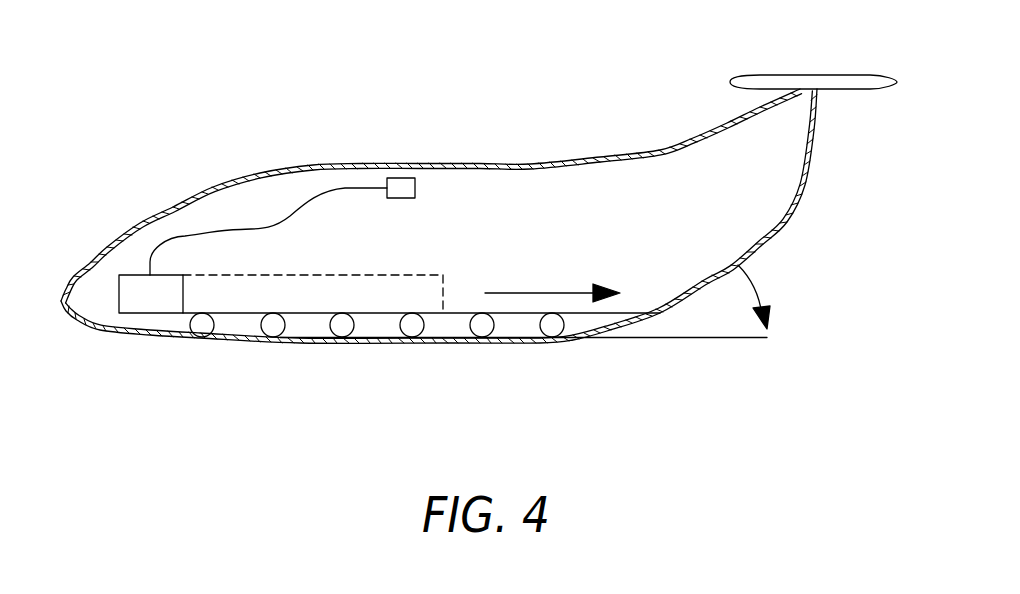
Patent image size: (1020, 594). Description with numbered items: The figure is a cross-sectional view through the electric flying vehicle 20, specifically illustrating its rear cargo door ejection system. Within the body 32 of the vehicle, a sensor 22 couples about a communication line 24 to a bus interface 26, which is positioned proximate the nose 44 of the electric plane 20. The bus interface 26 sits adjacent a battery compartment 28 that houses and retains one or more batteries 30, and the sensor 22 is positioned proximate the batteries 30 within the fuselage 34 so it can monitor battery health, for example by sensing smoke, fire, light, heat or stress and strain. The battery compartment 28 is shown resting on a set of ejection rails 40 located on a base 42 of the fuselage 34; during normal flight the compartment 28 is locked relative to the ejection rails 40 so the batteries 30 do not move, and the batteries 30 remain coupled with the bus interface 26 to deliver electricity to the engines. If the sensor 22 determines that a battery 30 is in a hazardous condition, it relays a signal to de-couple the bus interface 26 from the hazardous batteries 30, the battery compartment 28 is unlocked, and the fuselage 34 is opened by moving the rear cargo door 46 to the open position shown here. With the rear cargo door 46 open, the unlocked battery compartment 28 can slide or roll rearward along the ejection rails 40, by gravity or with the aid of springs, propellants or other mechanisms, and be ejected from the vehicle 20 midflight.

The electric flying vehicle 20 is at (462, 247).
The sensor 22 is at (400, 190).
The communication line 24 is at (232, 230).
The bus interface 26 is at (119, 295).
The battery compartment 28 is at (368, 276).
The batteries 30 is at (307, 290).
The body 32 is at (505, 163).
The fuselage 34 is at (242, 375).
The ejection rails 40 is at (202, 325).
The base 42 is at (508, 338).
The nose 44 is at (63, 305).
The rear cargo door 46 is at (708, 357).